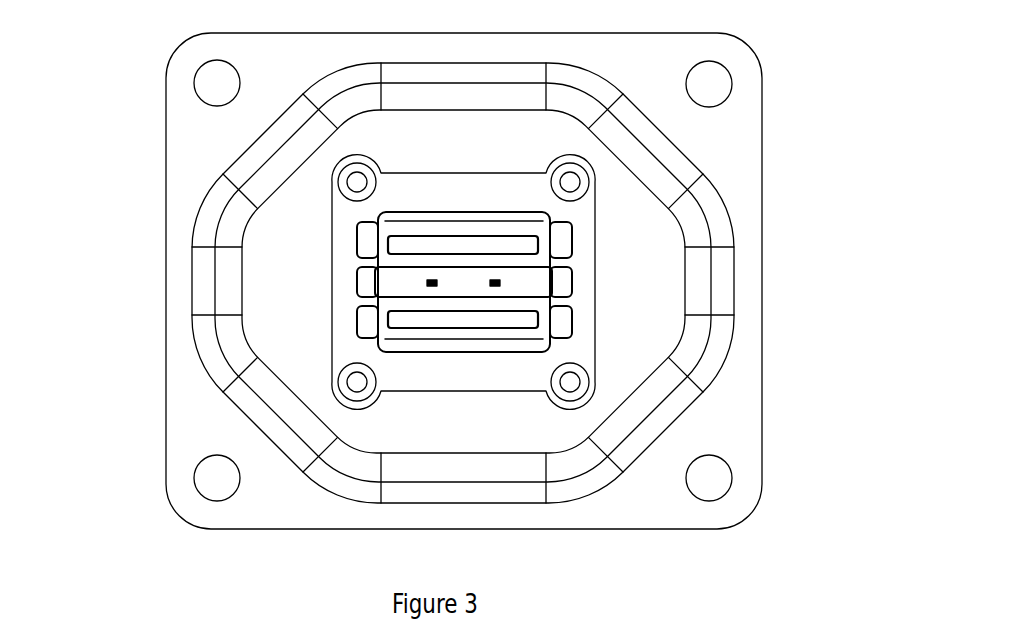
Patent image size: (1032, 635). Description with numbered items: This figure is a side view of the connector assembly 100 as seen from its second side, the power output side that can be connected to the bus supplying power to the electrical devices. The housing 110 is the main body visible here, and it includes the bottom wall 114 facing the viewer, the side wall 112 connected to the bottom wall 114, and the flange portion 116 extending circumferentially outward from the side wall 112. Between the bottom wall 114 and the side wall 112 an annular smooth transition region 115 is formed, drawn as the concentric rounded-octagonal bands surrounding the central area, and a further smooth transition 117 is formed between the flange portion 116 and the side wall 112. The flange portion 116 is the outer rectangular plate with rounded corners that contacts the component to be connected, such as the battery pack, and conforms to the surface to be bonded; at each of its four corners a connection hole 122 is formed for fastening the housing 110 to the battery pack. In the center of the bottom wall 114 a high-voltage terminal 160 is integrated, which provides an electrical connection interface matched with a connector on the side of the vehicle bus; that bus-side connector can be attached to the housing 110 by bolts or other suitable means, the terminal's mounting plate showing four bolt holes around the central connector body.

The connector assembly 100 is at (454, 281).
The housing 110 is at (458, 281).
The side wall 112 is at (207, 335).
The bottom wall 114 is at (287, 262).
The annular smooth transition region 115 is at (228, 290).
The flange portion 116 is at (183, 419).
The smooth transition 117 is at (225, 182).
The connection hole 122 is at (210, 92).
The high-voltage terminal 160 is at (483, 197).